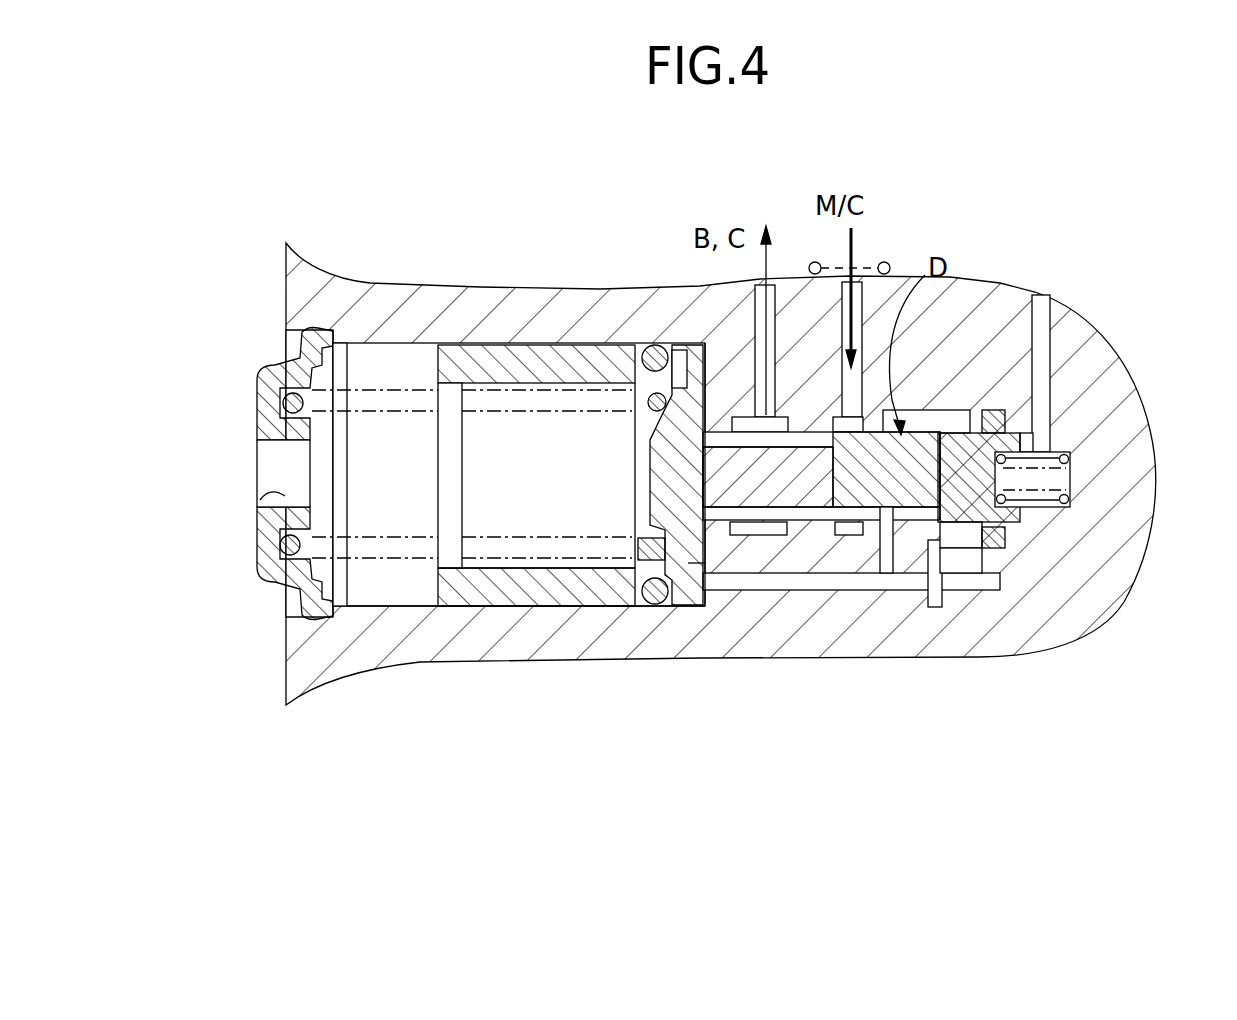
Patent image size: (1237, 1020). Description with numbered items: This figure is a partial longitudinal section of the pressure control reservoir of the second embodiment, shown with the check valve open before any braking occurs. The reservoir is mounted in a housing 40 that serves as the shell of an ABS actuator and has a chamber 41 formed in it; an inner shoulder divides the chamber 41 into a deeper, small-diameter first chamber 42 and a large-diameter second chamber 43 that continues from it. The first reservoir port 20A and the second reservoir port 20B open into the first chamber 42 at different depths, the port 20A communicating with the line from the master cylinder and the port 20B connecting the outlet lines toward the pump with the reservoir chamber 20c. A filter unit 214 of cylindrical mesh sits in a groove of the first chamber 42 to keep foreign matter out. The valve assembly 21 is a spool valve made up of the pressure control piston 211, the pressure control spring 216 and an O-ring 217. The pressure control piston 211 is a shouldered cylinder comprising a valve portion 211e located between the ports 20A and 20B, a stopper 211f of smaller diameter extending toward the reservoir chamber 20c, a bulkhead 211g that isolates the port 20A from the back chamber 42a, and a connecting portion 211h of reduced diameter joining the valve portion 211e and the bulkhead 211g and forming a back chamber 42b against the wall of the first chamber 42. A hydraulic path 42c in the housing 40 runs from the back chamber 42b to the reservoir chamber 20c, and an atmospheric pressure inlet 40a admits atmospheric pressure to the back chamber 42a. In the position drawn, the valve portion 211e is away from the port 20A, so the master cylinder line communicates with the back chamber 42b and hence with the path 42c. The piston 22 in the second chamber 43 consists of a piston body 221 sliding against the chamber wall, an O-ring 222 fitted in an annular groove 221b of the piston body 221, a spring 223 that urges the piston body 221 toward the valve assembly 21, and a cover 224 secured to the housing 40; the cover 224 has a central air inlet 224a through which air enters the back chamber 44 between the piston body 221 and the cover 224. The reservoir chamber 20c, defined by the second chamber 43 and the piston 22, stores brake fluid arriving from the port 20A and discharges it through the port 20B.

The housing 40 is at (1113, 547).
The atmospheric pressure inlet 40a is at (1053, 323).
The chamber 41 is at (403, 340).
The first chamber 42 is at (1032, 524).
The back chamber 42a is at (1050, 480).
The back chamber 42b is at (950, 540).
The hydraulic path 42c is at (948, 540).
The second chamber 43 is at (413, 607).
The back chamber 44 is at (370, 455).
The first reservoir port 20A is at (950, 330).
The second reservoir port 20B is at (735, 362).
The reservoir chamber 20c is at (695, 610).
The valve assembly 21 is at (948, 430).
The piston 22 is at (455, 606).
The pressure control piston 211 is at (848, 492).
The valve portion 211e is at (790, 512).
The stopper 211f is at (718, 480).
The bulkhead 211g is at (985, 548).
The connecting portion 211h is at (886, 495).
The filter unit 214 is at (888, 263).
The pressure control spring 216 is at (1000, 437).
The O-ring 217 is at (1003, 530).
The piston body 221 is at (488, 606).
The annular groove 221b is at (675, 608).
The O-ring 222 is at (645, 604).
The spring 223 is at (288, 560).
The cover 224 is at (258, 397).
The air inlet 224a is at (262, 492).